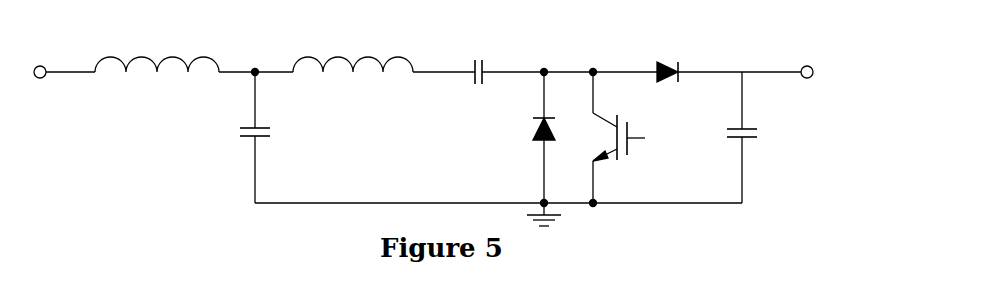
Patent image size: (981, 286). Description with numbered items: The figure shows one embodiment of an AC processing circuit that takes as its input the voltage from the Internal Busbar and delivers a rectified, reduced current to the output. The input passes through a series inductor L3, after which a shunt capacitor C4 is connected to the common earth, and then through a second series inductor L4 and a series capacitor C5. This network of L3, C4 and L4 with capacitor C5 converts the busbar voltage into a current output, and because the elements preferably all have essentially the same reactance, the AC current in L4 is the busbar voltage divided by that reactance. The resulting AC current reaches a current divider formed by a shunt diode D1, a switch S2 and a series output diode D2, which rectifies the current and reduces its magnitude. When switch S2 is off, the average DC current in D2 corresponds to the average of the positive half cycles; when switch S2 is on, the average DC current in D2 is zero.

The inductor L3 is at (157, 80).
The inductor L4 is at (353, 80).
The capacitor C5 is at (466, 82).
The capacitor C4 is at (268, 137).
The diode D1 is at (531, 137).
The diode D2 is at (666, 86).
The switch S2 is at (620, 137).